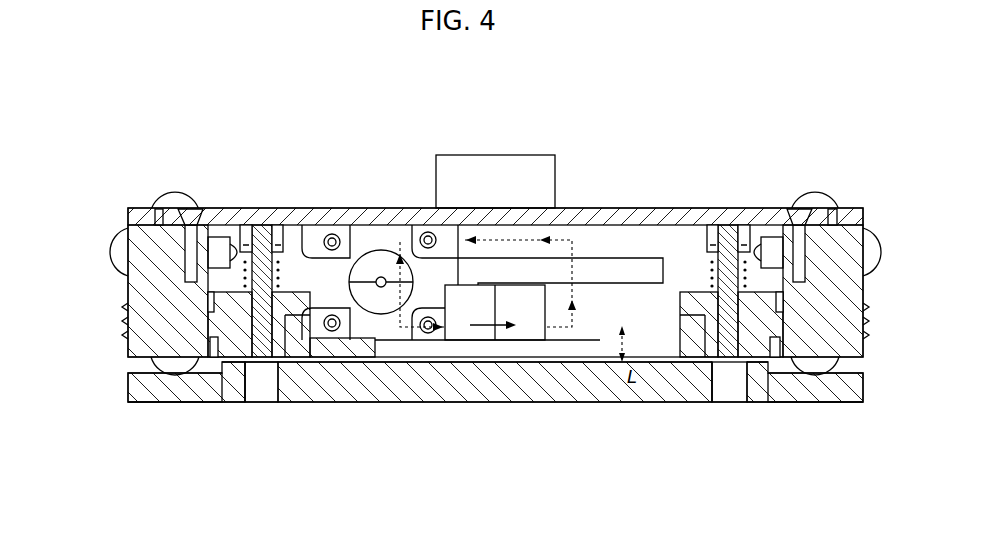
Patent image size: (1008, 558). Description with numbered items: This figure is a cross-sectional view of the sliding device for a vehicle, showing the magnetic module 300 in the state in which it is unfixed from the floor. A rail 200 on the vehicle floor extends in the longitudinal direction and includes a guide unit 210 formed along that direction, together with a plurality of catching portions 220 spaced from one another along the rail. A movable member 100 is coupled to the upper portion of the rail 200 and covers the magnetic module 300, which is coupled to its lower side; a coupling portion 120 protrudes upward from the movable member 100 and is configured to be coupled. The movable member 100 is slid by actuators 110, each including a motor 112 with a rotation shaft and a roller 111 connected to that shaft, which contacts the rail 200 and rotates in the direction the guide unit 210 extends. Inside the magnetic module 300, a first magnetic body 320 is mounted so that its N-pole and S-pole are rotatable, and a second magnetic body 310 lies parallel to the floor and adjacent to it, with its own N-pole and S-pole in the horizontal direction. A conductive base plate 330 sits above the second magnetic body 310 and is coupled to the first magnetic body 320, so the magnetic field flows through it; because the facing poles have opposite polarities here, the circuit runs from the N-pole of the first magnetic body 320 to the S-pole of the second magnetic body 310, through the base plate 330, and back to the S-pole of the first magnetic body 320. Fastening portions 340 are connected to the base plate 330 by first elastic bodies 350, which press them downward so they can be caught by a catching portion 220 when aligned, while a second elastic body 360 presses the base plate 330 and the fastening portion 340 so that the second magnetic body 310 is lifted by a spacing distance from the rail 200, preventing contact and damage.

The movable member 100 is at (741, 182).
The actuator 110 is at (116, 200).
The roller 111 is at (175, 366).
The motor 112 is at (146, 208).
The coupling portion 120 is at (500, 155).
The rail 200 is at (462, 390).
The guide unit 210 is at (128, 364).
The catching portion 220 is at (264, 390).
The magnetic module 300 is at (386, 349).
The second magnetic body 310 is at (522, 332).
The first magnetic body 320 is at (378, 237).
The base plate 330 is at (607, 245).
The fastening portion 340 is at (243, 357).
The first elastic body 350 is at (236, 225).
The second elastic body 360 is at (282, 224).